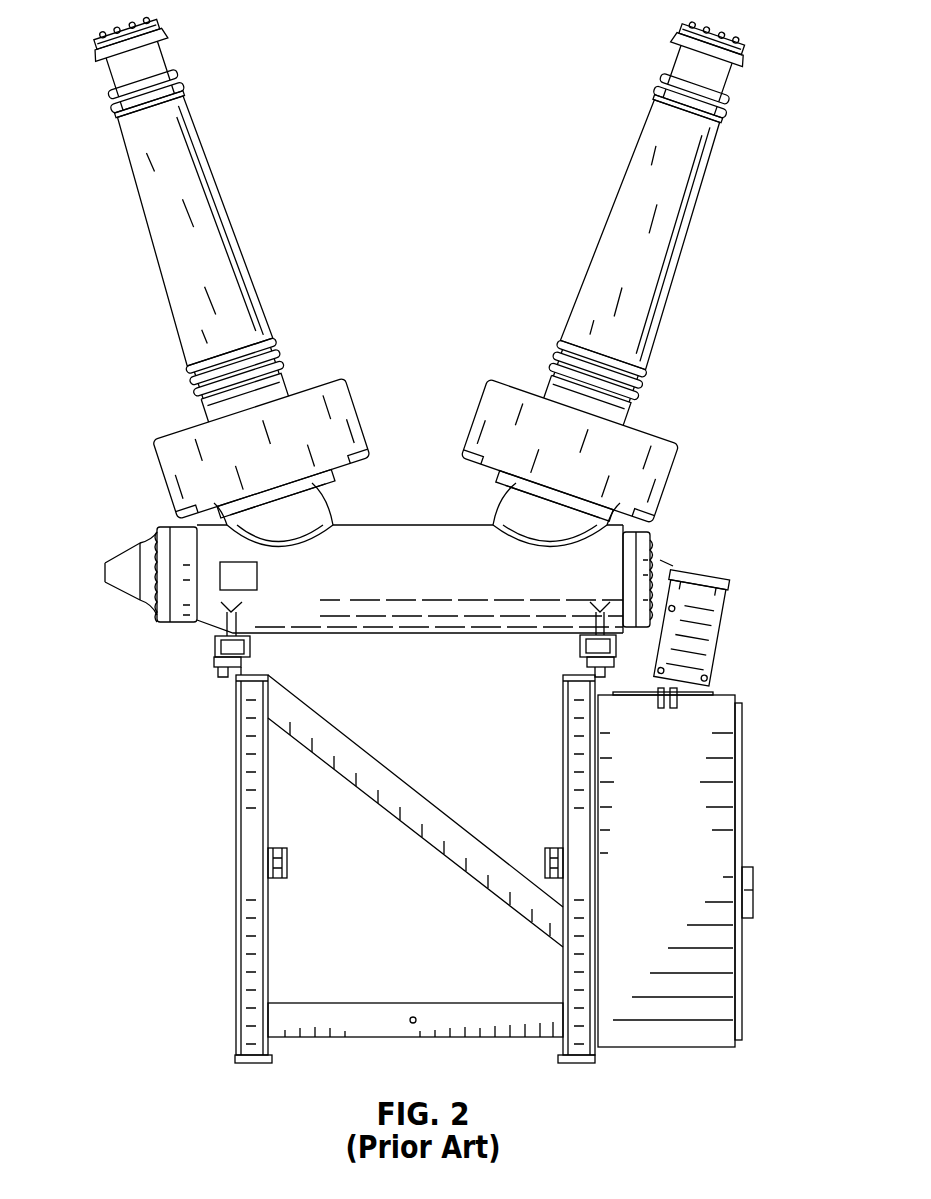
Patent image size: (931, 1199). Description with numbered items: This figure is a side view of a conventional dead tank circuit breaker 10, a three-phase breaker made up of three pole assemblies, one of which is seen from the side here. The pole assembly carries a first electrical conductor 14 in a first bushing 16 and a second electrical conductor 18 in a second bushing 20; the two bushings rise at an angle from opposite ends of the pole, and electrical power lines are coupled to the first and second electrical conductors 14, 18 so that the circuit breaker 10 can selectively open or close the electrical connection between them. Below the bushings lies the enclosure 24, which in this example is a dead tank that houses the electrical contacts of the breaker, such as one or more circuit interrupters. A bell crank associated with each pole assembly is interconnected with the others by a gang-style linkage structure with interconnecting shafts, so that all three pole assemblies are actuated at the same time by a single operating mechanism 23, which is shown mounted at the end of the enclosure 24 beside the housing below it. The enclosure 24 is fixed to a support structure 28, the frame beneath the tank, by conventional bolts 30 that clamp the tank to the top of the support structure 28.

The circuit breaker 10 is at (416, 146).
The first electrical conductor 14 is at (715, 43).
The first bushing 16 is at (690, 233).
The second electrical conductor 18 is at (128, 45).
The second bushing 20 is at (220, 192).
The operating mechanism 23 is at (730, 672).
The enclosure 24 is at (452, 624).
The support structure 28 is at (220, 660).
The bolts 30 is at (253, 643).